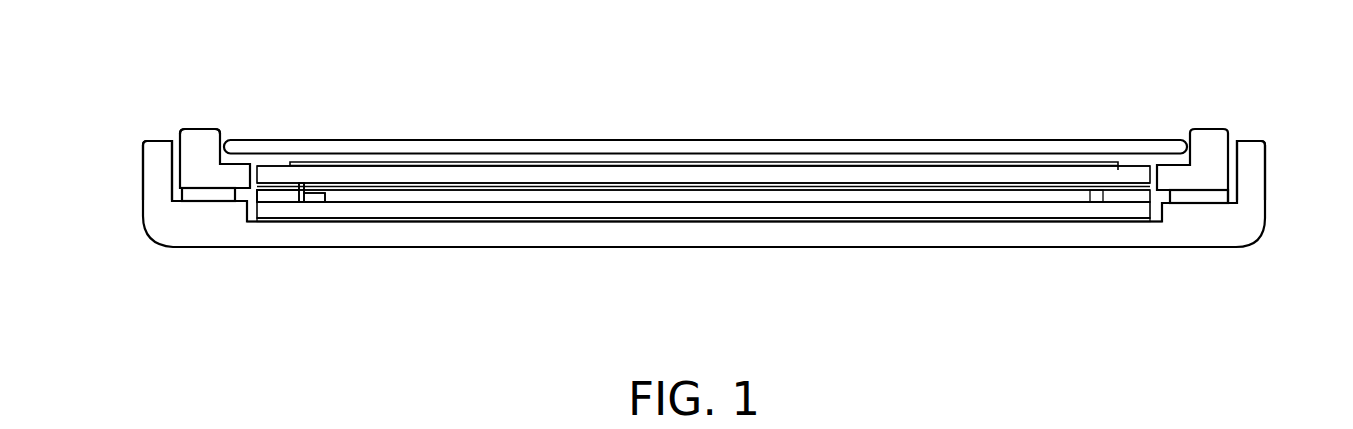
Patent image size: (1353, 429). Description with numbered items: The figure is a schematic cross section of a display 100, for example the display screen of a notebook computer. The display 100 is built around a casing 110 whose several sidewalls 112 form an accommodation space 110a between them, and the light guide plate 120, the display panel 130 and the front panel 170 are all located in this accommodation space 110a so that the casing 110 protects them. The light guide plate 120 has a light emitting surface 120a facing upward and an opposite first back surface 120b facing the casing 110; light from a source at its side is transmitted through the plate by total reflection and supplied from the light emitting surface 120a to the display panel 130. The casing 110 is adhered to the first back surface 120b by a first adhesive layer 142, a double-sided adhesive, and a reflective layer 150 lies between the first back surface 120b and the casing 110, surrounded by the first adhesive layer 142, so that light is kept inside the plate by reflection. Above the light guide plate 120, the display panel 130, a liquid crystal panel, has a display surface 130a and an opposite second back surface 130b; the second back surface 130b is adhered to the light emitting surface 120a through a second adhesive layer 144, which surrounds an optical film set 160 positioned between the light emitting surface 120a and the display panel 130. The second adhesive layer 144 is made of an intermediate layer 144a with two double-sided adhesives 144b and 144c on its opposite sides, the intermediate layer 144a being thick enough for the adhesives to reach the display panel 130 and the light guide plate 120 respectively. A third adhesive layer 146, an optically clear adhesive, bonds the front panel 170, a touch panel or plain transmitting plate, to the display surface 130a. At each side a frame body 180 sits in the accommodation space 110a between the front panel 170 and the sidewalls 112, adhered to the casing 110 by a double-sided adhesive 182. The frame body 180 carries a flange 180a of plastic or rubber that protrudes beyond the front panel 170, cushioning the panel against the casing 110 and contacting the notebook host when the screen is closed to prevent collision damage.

The display 100 is at (1270, 326).
The casing 110 is at (866, 236).
The accommodation space 110a is at (1230, 143).
The sidewalls 112 is at (146, 176).
The light guide plate 120 is at (645, 216).
The light emitting surface 120a is at (598, 202).
The first back surface 120b is at (598, 218).
The display panel 130 is at (775, 176).
The display surface 130a is at (705, 165).
The second back surface 130b is at (705, 184).
The first adhesive layer 142 is at (281, 223).
The second adhesive layer 144 is at (407, 53).
The intermediate layer 144a is at (301, 190).
The double-sided adhesive 144b is at (275, 186).
The double-sided adhesive 144c is at (318, 200).
The third adhesive layer 146 is at (872, 156).
The reflective layer 150 is at (517, 219).
The optical film set 160 is at (462, 199).
The front panel 170 is at (931, 149).
The frame body 180 is at (198, 181).
The flange 180a is at (202, 128).
The double-sided adhesive 182 is at (224, 195).